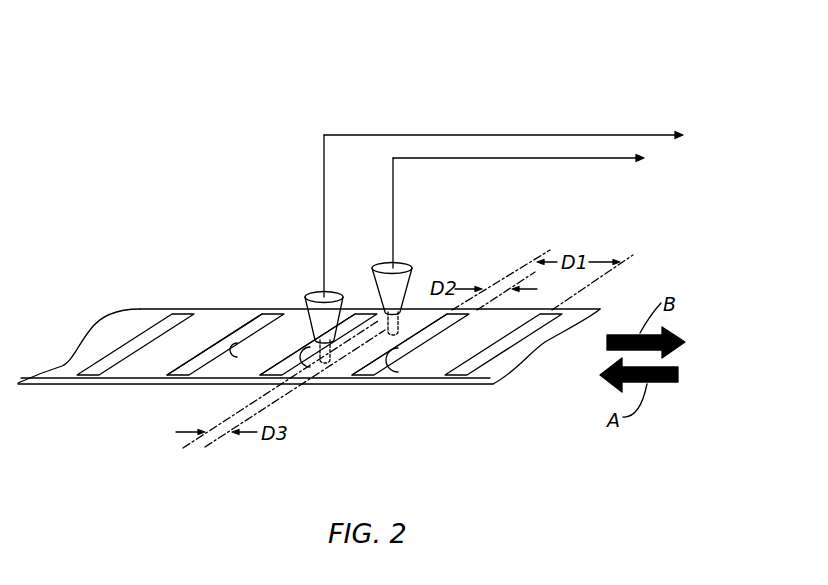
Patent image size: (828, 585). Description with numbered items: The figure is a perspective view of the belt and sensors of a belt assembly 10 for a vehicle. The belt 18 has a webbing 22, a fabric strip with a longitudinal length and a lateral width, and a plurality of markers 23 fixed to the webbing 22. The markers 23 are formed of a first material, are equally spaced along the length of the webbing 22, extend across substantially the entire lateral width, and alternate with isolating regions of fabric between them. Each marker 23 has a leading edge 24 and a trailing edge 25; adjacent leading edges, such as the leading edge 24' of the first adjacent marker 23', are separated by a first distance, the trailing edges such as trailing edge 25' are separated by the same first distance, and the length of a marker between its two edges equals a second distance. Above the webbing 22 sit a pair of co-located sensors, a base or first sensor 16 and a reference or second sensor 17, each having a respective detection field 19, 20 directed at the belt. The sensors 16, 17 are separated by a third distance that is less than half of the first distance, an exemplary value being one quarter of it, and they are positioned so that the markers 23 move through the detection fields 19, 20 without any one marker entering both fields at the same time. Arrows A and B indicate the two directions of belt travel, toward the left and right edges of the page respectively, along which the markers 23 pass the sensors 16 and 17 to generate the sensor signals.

The belt assembly 10 is at (146, 95).
The first sensor 16 is at (501, 245).
The second sensor 17 is at (313, 292).
The belt 18 is at (165, 394).
The detection field 19 is at (382, 328).
The detection field 20 is at (378, 327).
The webbing 22 is at (461, 384).
The marker 23 is at (287, 366).
The first adjacent marker 23' is at (383, 366).
The leading edge 24 is at (282, 307).
The leading edge 24' is at (399, 376).
The trailing edge 25 is at (293, 318).
The trailing edge 25' is at (421, 394).